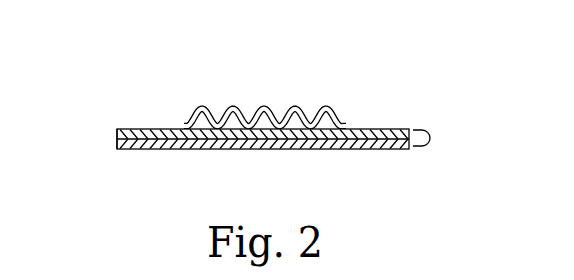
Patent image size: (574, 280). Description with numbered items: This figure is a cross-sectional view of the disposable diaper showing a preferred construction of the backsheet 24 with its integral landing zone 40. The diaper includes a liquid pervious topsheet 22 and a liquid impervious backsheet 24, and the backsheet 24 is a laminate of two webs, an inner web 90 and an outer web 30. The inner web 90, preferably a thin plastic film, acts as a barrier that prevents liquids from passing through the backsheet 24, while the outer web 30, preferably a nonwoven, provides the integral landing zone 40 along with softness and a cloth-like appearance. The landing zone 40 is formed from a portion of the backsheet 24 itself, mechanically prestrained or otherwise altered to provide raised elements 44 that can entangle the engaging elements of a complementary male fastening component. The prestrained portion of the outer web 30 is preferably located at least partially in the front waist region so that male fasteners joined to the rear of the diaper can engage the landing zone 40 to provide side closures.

The topsheet 22 is at (255, 137).
The backsheet 24 is at (430, 138).
The outer web 30 is at (372, 129).
The landing zone 40 is at (265, 75).
The raised elements 44 is at (193, 103).
The inner web 90 is at (128, 129).